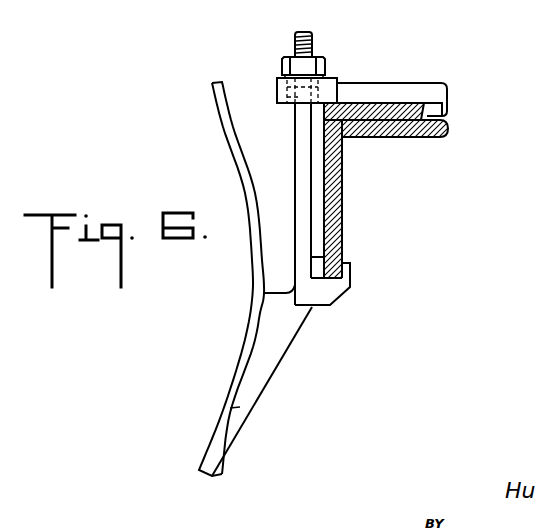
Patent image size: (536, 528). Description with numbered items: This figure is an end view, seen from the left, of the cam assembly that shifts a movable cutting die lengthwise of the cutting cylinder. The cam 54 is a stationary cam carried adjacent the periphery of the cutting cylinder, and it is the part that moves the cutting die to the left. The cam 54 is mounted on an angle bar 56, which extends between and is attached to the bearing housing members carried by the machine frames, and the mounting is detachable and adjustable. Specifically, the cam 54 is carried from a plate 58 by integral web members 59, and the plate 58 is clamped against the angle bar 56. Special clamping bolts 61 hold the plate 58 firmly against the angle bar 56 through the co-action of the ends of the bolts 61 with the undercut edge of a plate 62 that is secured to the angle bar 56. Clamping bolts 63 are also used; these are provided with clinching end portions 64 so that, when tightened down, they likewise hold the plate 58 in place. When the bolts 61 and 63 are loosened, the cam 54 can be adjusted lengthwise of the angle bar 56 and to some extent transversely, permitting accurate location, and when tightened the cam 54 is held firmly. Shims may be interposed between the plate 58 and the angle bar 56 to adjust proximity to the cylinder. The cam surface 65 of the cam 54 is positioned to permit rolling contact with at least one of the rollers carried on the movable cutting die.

The cam 54 is at (238, 393).
The angle bar 56 is at (342, 176).
The plate 58 is at (320, 230).
The integral web members 59 is at (295, 130).
The clamping bolts 61 is at (396, 92).
The plate 62 is at (408, 114).
The clamping bolts 63 is at (313, 38).
The clinching end portions 64 is at (333, 290).
The cam surface 65 is at (252, 322).